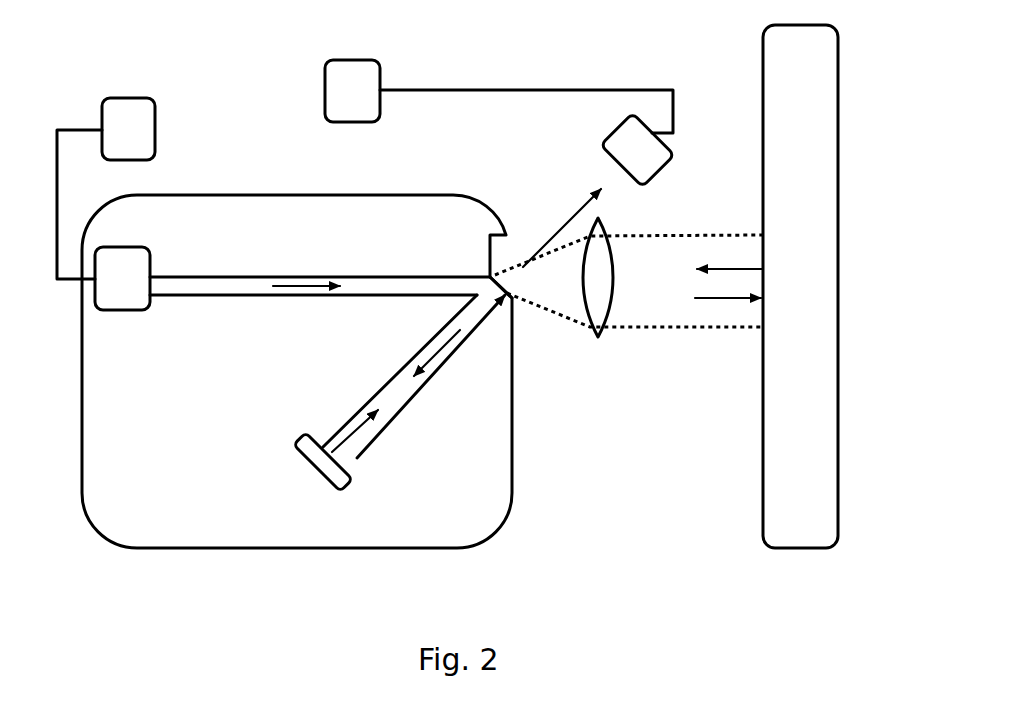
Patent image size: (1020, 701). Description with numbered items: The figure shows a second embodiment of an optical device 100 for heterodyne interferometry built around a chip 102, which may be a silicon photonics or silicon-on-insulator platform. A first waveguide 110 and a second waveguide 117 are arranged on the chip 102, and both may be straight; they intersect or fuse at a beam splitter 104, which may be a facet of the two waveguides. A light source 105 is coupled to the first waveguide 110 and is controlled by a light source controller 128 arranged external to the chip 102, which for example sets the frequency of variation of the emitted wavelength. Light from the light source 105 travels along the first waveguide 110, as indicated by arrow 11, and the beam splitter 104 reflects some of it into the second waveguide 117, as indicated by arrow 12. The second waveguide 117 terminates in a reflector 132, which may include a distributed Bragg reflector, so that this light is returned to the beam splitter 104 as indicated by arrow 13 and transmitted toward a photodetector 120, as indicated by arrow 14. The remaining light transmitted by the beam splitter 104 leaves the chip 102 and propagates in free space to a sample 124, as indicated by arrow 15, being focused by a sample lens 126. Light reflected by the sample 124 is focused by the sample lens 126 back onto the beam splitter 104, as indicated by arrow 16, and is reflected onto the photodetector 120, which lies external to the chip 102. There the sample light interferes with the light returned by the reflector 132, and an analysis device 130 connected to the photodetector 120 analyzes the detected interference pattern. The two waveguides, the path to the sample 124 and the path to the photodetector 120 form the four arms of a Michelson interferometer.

The optical device 100 is at (281, 405).
The chip 102 is at (297, 371).
The beam splitter 104 is at (512, 302).
The light source 105 is at (135, 247).
The first waveguide 110 is at (357, 283).
The arrow 11 is at (302, 280).
The second waveguide 117 is at (363, 440).
The reflector 132 is at (320, 478).
The arrow 12 is at (440, 350).
The arrow 13 is at (355, 437).
The arrow 14 is at (562, 220).
The photodetector 120 is at (600, 150).
The analysis device 130 is at (380, 70).
The light source controller 128 is at (155, 105).
The sample lens 126 is at (598, 337).
The sample 124 is at (763, 527).
The arrow 15 is at (723, 299).
The arrow 16 is at (742, 268).